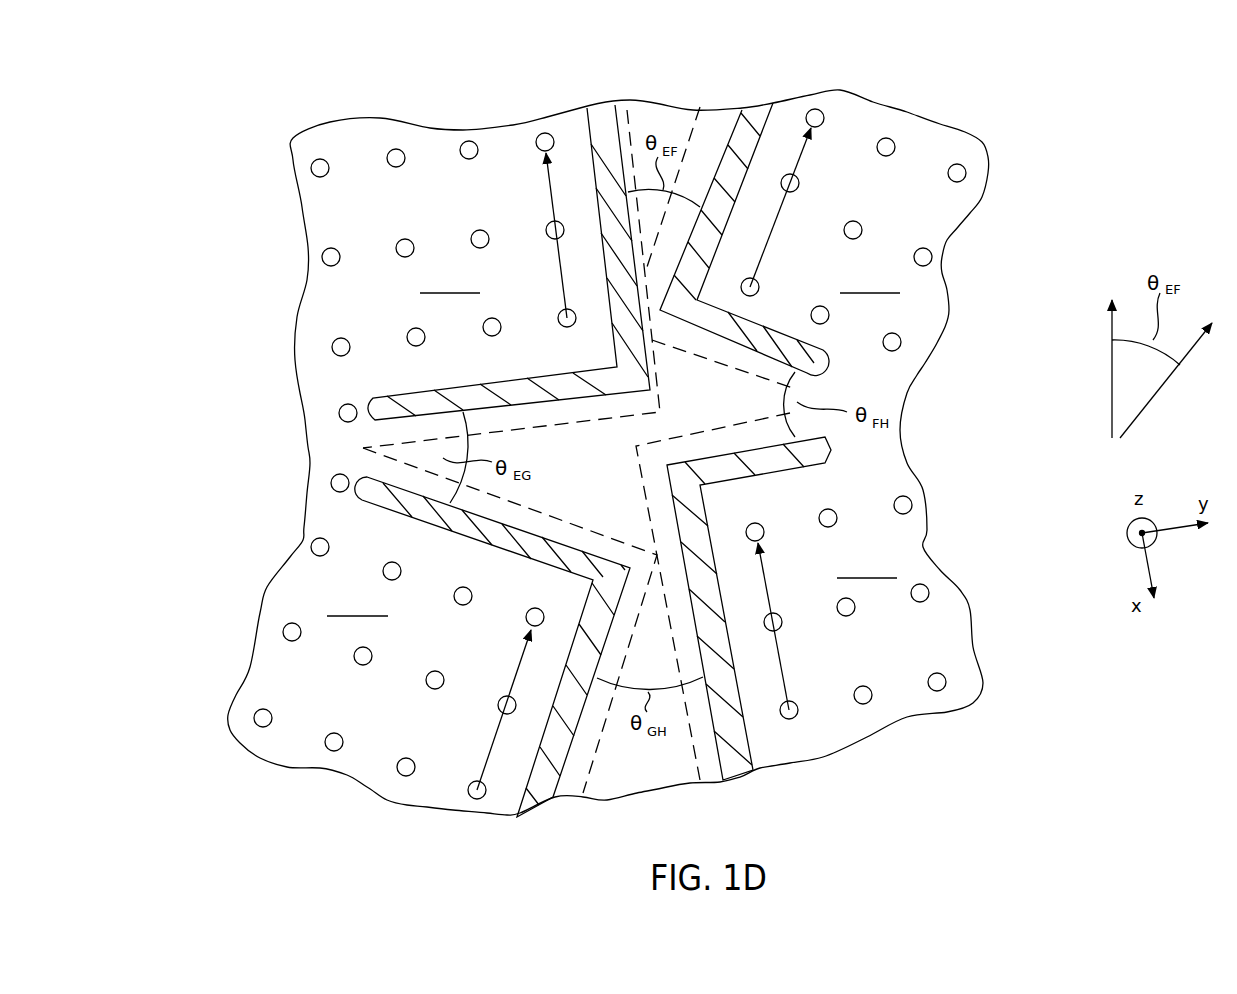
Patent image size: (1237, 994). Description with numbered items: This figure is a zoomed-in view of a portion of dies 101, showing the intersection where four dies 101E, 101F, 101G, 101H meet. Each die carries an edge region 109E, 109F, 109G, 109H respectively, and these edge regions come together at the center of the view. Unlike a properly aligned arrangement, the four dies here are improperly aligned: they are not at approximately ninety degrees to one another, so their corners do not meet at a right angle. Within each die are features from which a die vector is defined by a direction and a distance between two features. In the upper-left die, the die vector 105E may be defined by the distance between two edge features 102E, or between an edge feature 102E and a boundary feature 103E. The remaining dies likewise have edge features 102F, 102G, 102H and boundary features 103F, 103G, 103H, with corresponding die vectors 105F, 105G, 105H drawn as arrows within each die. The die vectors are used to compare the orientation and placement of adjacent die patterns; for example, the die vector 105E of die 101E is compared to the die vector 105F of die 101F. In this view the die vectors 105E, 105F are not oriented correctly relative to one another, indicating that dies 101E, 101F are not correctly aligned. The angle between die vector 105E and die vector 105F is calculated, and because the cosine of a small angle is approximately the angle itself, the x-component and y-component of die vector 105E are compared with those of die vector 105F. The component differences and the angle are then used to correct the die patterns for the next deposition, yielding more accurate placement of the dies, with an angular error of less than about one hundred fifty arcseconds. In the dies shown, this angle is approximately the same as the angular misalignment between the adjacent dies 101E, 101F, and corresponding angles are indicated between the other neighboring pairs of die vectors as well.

The die 101 is at (1145, 143).
The die 101E is at (297, 123).
The die 101F is at (963, 113).
The die 101G is at (257, 558).
The die 101H is at (943, 550).
The edge feature 102E is at (472, 141).
The edge feature 102F is at (818, 110).
The edge feature 102G is at (406, 776).
The edge feature 102H is at (869, 702).
The boundary feature 103E is at (505, 382).
The boundary feature 103F is at (717, 327).
The boundary feature 103G is at (573, 550).
The boundary feature 103H is at (725, 467).
The die vector 105E is at (552, 200).
The die vector 105F is at (795, 174).
The die vector 105G is at (516, 676).
The die vector 105H is at (778, 648).
The edge region 109E is at (450, 280).
The edge region 109F is at (870, 280).
The edge region 109G is at (358, 603).
The edge region 109H is at (867, 565).